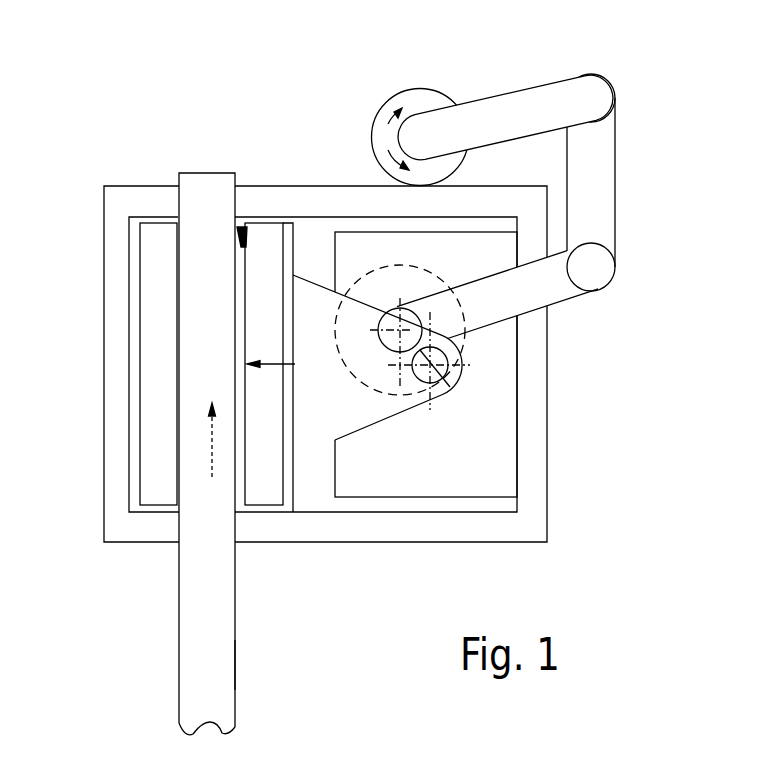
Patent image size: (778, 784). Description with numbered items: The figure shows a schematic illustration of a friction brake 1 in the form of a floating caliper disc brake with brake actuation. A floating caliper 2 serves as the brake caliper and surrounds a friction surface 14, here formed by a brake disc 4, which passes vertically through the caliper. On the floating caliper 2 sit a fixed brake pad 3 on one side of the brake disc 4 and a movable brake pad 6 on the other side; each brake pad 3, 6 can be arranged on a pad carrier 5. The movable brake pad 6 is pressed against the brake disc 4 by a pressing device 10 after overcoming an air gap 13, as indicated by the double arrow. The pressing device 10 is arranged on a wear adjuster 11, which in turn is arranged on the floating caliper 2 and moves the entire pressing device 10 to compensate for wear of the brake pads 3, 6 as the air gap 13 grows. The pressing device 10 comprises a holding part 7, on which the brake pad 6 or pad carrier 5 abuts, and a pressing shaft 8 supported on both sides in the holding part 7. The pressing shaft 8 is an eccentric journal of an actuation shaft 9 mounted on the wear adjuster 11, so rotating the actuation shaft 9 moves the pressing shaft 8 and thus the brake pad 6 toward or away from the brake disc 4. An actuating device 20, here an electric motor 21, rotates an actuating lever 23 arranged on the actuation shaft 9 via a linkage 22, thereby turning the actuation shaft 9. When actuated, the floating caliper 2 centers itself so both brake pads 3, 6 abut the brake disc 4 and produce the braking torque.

The friction brake 1 is at (167, 118).
The floating caliper 2 is at (530, 503).
The fixed brake pad 3 is at (158, 413).
The brake disc 4 is at (210, 622).
The pad carrier 5 is at (133, 227).
The movable brake pad 6 is at (268, 255).
The holding part 7 is at (318, 312).
The pressing shaft 8 is at (447, 373).
The actuation shaft 9 is at (428, 335).
The pressing device 10 is at (466, 269).
The wear adjuster 11 is at (473, 472).
The air gap 13 is at (227, 174).
The friction surface 14 is at (250, 665).
The actuating device 20 is at (521, 73).
The electric motor 21 is at (418, 105).
The linkage 22 is at (630, 140).
The actuating lever 23 is at (520, 293).